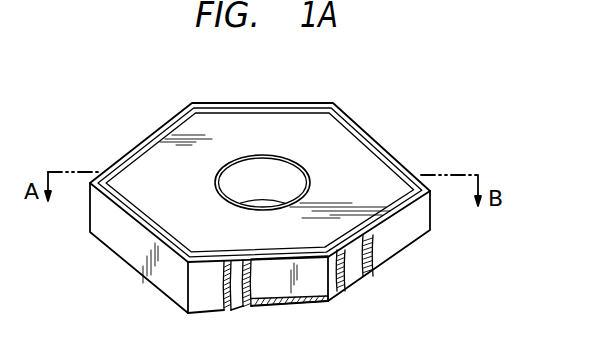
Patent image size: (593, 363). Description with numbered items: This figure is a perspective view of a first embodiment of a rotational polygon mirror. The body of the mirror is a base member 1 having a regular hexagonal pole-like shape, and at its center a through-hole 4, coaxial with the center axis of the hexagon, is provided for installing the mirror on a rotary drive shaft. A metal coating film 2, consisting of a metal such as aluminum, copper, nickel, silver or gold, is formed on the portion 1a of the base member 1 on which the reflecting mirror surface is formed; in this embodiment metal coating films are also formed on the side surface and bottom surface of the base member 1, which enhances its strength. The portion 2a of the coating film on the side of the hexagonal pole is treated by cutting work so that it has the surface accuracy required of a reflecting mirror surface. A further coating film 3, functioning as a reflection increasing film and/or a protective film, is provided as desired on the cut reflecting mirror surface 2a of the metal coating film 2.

The base member 1 is at (363, 155).
The portion of base member 1a is at (303, 293).
The metal coating film 2 is at (217, 112).
The reflecting mirror surface portion 2a is at (355, 275).
The coating film 3 is at (412, 238).
The through-hole 4 is at (270, 165).